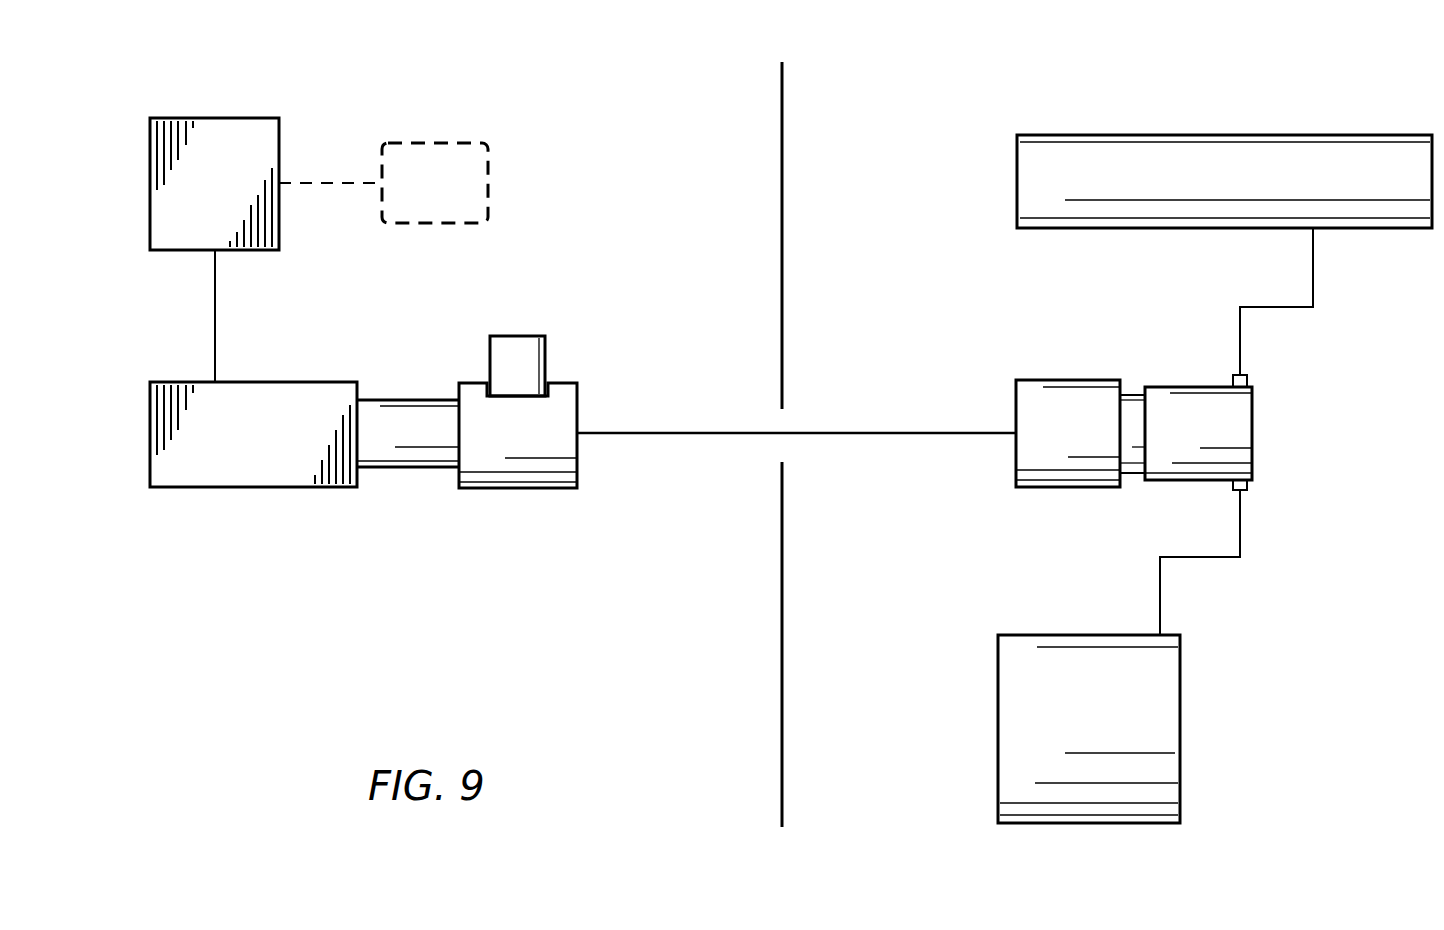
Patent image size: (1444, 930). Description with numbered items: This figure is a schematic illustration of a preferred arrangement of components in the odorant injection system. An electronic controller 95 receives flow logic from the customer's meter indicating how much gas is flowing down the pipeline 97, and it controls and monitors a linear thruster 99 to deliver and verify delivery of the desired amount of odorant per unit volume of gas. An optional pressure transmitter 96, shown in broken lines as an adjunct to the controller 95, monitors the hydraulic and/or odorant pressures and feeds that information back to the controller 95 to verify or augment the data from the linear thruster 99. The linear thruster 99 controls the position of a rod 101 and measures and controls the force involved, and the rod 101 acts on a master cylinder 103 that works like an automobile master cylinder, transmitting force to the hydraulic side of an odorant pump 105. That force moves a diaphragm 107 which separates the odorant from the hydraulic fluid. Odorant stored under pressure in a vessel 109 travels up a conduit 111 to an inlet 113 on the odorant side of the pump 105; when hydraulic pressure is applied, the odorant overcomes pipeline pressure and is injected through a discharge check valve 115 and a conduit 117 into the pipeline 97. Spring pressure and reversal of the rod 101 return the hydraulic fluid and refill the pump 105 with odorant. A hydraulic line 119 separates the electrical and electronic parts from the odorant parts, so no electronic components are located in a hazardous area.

The electronic controller 95 is at (190, 117).
The pressure transmitter 96 is at (434, 143).
The pipeline 97 is at (1240, 133).
The linear thruster 99 is at (252, 488).
The rod 101 is at (403, 468).
The master cylinder 103 is at (505, 489).
The odorant pump 105 is at (1078, 380).
The diaphragm 107 is at (1135, 395).
The vessel 109 is at (1181, 725).
The conduit 111 is at (1162, 583).
The inlet 113 is at (1248, 490).
The discharge check valve 115 is at (1248, 380).
The conduit 117 is at (1315, 285).
The hydraulic line 119 is at (675, 435).